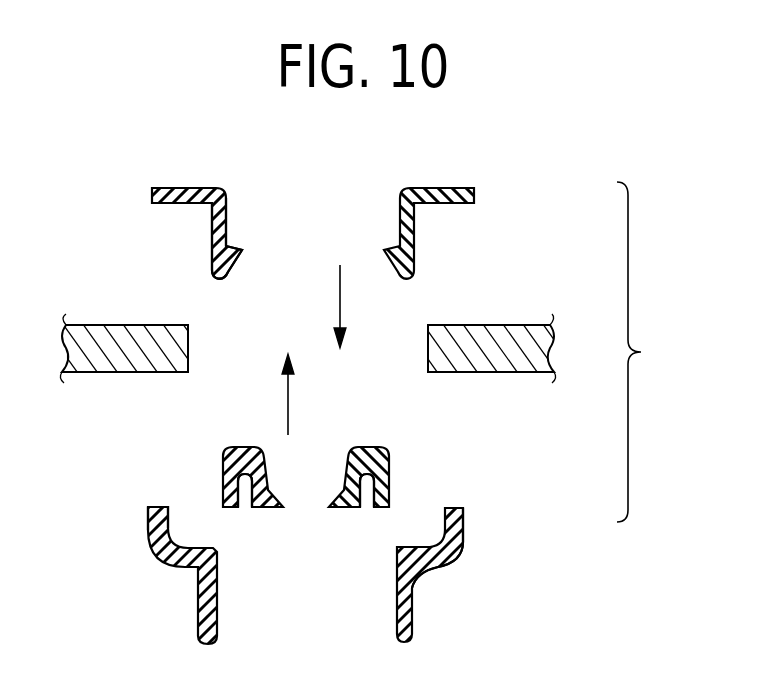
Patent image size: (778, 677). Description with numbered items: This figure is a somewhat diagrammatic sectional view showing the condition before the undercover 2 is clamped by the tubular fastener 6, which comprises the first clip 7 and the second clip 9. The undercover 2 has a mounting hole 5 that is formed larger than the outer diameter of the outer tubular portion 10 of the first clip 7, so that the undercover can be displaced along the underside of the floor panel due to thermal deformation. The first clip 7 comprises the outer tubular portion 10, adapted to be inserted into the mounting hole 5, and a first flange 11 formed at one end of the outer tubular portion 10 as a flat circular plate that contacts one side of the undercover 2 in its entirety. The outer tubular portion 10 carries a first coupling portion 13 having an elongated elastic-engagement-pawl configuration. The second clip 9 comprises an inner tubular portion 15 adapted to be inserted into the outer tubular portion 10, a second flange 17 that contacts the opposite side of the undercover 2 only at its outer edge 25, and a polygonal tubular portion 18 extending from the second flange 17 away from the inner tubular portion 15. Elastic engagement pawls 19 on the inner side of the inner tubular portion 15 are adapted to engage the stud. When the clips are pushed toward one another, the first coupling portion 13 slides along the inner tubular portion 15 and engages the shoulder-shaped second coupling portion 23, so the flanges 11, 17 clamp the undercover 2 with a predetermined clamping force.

The undercover 2 is at (95, 325).
The mounting hole 5 is at (428, 355).
The tubular fastener 6 is at (642, 352).
The first clip 7 is at (487, 201).
The second clip 9 is at (486, 525).
The outer tubular portion 10 is at (212, 230).
The first flange 11 is at (150, 195).
The first coupling portion 13 is at (227, 283).
The inner tubular portion 15 is at (390, 474).
The second flange 17 is at (165, 556).
The polygonal tubular portion 18 is at (413, 598).
The elastic engagement pawl 19 is at (272, 510).
The second coupling portion 23 is at (228, 512).
The outer edge 25 is at (153, 507).